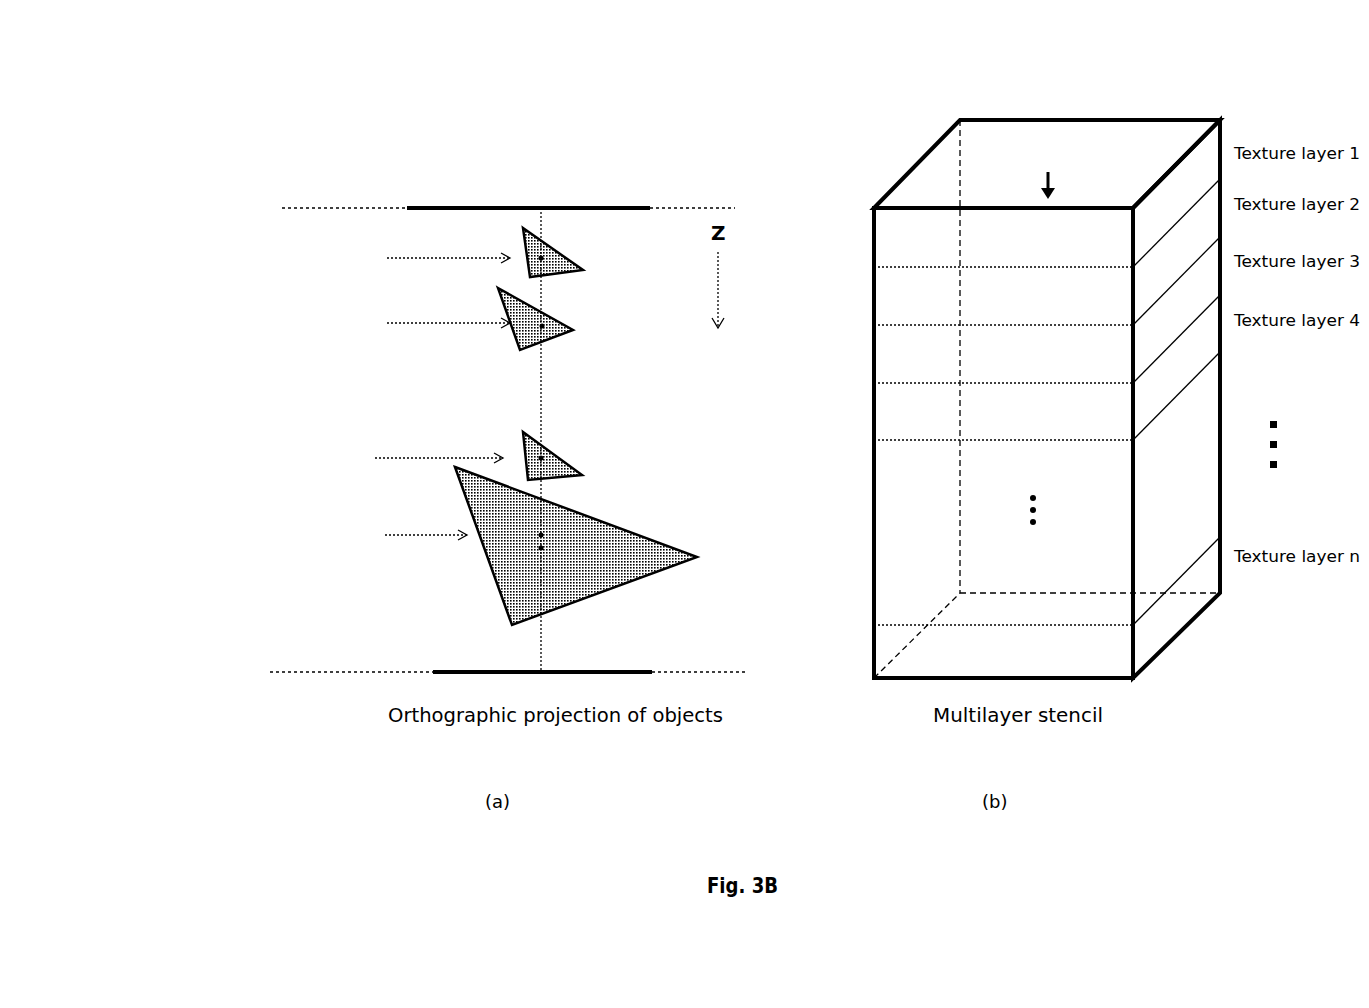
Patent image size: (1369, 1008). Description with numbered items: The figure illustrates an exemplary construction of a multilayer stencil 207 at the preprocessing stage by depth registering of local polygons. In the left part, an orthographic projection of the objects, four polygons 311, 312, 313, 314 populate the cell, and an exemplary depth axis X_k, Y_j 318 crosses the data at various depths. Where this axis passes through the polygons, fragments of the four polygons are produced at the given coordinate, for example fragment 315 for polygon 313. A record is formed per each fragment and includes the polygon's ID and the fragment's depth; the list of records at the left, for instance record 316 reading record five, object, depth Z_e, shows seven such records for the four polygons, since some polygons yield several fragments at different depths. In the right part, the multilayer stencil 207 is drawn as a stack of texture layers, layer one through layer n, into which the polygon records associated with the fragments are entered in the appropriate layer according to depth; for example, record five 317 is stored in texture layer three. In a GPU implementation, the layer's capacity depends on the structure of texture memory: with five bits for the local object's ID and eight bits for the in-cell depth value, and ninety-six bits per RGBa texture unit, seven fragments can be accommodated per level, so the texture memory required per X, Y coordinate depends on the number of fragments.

The multilayer stencil 207 is at (868, 112).
The polygon 311 is at (580, 255).
The polygon 312 is at (575, 322).
The polygon 313 is at (560, 453).
The polygon 314 is at (618, 523).
The fragment 315 is at (522, 440).
The record 316 is at (168, 443).
The record 5 317 is at (1063, 360).
The depth axis X_k, Y_j 318 is at (528, 165).